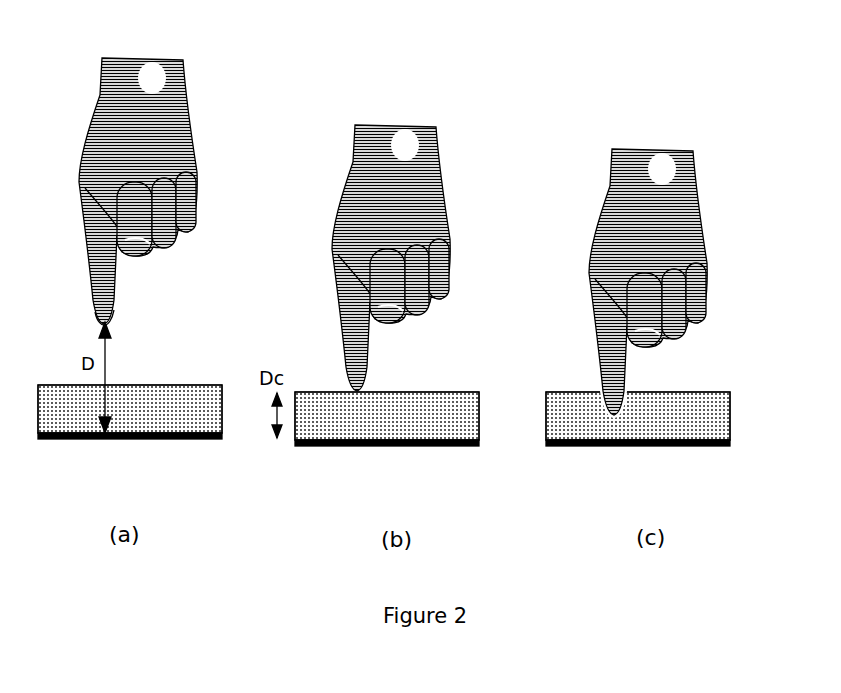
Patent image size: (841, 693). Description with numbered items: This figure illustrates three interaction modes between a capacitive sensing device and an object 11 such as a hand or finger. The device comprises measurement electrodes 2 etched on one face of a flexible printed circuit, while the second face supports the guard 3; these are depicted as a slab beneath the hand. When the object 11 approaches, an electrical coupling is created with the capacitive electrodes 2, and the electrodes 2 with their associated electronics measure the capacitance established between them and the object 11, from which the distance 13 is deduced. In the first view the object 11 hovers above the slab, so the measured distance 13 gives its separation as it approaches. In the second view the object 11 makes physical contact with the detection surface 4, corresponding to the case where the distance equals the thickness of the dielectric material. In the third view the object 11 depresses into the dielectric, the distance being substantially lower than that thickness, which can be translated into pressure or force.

The measurement electrodes 2 is at (135, 442).
The guard 3 is at (192, 405).
The detection surface 4 is at (459, 392).
The object 11 is at (180, 62).
The distance 13 is at (100, 352).